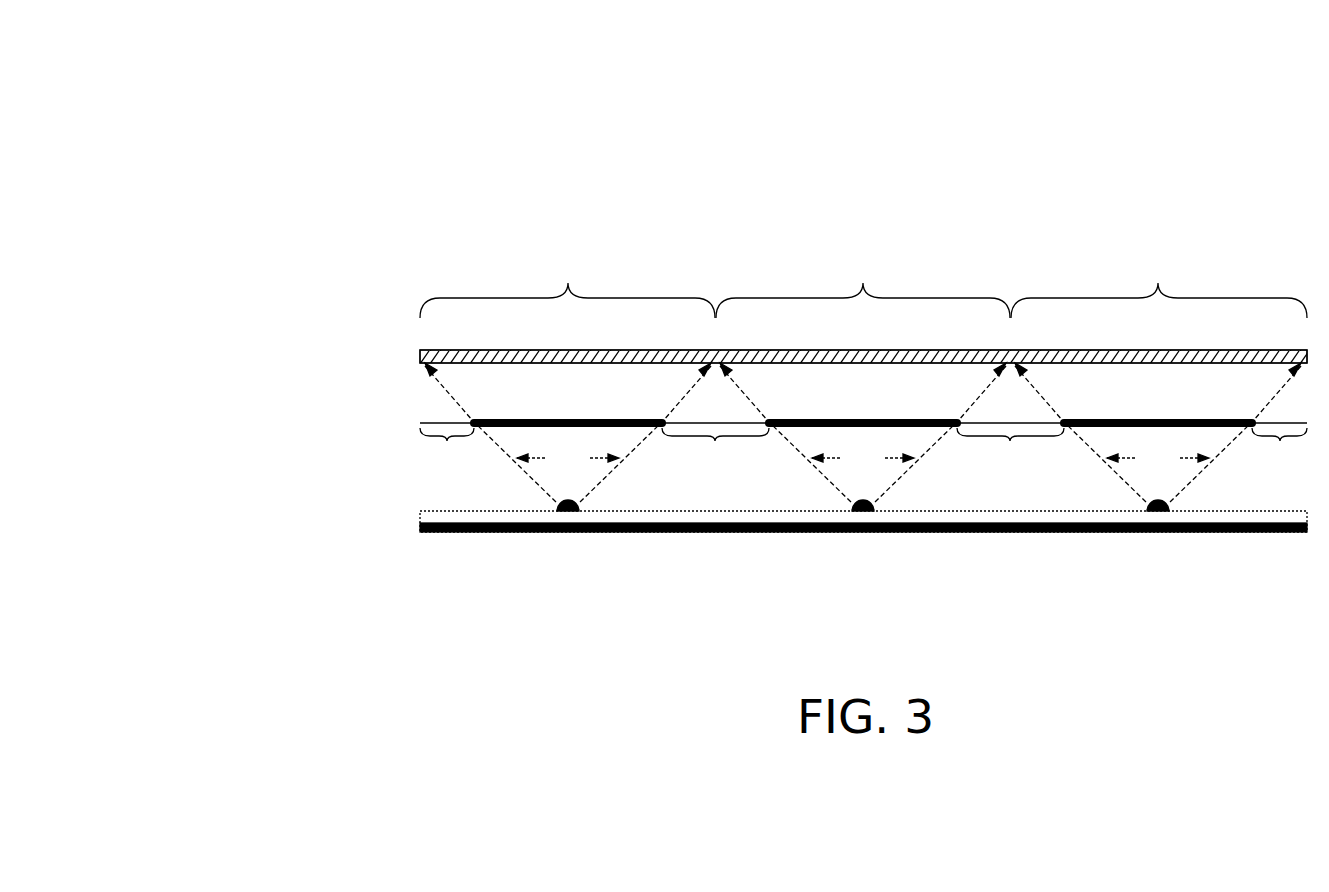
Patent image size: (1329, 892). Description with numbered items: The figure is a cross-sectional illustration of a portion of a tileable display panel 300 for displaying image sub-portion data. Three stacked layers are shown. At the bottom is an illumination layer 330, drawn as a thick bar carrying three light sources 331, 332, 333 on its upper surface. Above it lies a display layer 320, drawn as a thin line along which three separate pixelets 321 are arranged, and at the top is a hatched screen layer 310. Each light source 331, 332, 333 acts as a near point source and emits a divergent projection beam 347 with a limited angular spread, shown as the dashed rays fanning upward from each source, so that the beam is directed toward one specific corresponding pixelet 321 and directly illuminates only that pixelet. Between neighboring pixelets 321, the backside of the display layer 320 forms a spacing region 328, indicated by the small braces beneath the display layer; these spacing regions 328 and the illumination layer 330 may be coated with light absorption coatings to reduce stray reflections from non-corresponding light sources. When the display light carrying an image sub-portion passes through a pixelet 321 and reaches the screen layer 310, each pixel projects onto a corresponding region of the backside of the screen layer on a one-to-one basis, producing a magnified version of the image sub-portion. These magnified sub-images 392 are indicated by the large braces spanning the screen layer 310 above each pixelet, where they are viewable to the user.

The tileable display panel 300 is at (266, 140).
The screen layer 310 is at (398, 363).
The display layer 320 is at (398, 423).
The pixelet 321 is at (643, 417).
The spacing region 328 is at (863, 449).
The illumination layer 330 is at (398, 527).
The light source 331 is at (580, 507).
The light source 332 is at (875, 507).
The light source 333 is at (1170, 507).
The divergent projection beam 347 is at (863, 457).
The magnified sub-image 392 is at (863, 271).